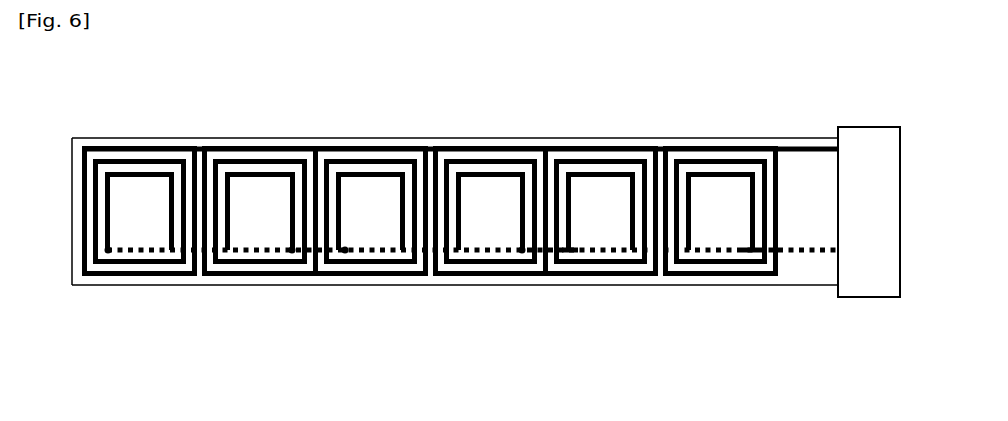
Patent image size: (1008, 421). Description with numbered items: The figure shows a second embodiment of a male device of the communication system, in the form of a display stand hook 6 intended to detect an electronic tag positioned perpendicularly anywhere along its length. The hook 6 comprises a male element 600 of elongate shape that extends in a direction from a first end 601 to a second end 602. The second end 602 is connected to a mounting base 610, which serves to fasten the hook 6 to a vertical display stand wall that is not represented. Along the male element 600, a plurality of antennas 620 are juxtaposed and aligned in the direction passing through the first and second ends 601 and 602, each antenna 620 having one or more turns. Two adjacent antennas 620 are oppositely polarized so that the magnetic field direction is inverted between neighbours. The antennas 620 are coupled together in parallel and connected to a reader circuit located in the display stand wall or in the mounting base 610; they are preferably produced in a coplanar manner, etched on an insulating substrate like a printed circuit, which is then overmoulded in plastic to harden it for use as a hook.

The display stand hook 6 is at (616, 114).
The male element 600 is at (372, 138).
The first end 601 is at (68, 250).
The second end 602 is at (830, 289).
The mounting base 610 is at (853, 126).
The antennas 620 is at (232, 273).